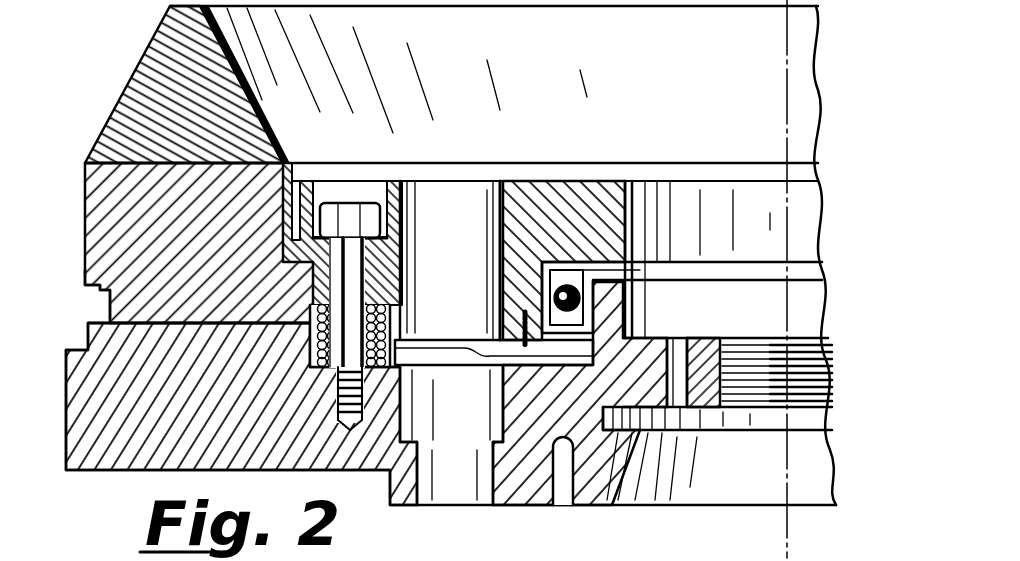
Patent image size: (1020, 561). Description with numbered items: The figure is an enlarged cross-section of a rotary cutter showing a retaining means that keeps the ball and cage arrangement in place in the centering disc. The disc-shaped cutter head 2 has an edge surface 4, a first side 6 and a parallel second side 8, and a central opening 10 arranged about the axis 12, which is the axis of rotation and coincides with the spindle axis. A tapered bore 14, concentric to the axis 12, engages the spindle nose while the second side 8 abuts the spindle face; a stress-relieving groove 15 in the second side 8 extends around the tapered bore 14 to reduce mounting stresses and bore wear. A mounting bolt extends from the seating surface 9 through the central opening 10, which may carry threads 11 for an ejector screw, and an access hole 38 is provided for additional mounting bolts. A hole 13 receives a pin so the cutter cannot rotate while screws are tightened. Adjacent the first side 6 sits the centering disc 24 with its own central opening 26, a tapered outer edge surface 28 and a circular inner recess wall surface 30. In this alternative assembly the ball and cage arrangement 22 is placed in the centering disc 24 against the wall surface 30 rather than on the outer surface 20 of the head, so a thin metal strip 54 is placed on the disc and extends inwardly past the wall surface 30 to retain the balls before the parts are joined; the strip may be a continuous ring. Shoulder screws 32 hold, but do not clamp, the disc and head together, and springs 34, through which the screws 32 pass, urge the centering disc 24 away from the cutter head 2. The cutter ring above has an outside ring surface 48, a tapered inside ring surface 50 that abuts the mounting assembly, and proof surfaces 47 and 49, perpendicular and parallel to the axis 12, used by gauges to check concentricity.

The cutter head 2 is at (113, 457).
The edge surface 4 is at (66, 428).
The first side 6 is at (140, 323).
The second side 8 is at (511, 492).
The seating surface 9 is at (684, 340).
The central opening 10 is at (766, 408).
The threads 11 is at (733, 410).
The axis 12 is at (787, 58).
The hole 13 is at (705, 340).
The tapered bore 14 is at (632, 483).
The stress-relieving groove 15 is at (563, 487).
The outer surface 20 is at (660, 340).
The ball and cage arrangement 22 is at (503, 290).
The centering disc 24 is at (563, 190).
The central opening 26 is at (740, 200).
The tapered outer edge surface 28 is at (322, 240).
The circular inner recess wall surface 30 is at (500, 262).
The shoulder screws 32 is at (350, 240).
The springs 34 is at (385, 350).
The access hole 38 is at (461, 490).
The proof surface 47 is at (100, 287).
The outside ring surface 48 is at (85, 244).
The proof surface 49 is at (110, 310).
The tapered inside ring surface 50 is at (283, 160).
The thin metal strip 54 is at (478, 362).